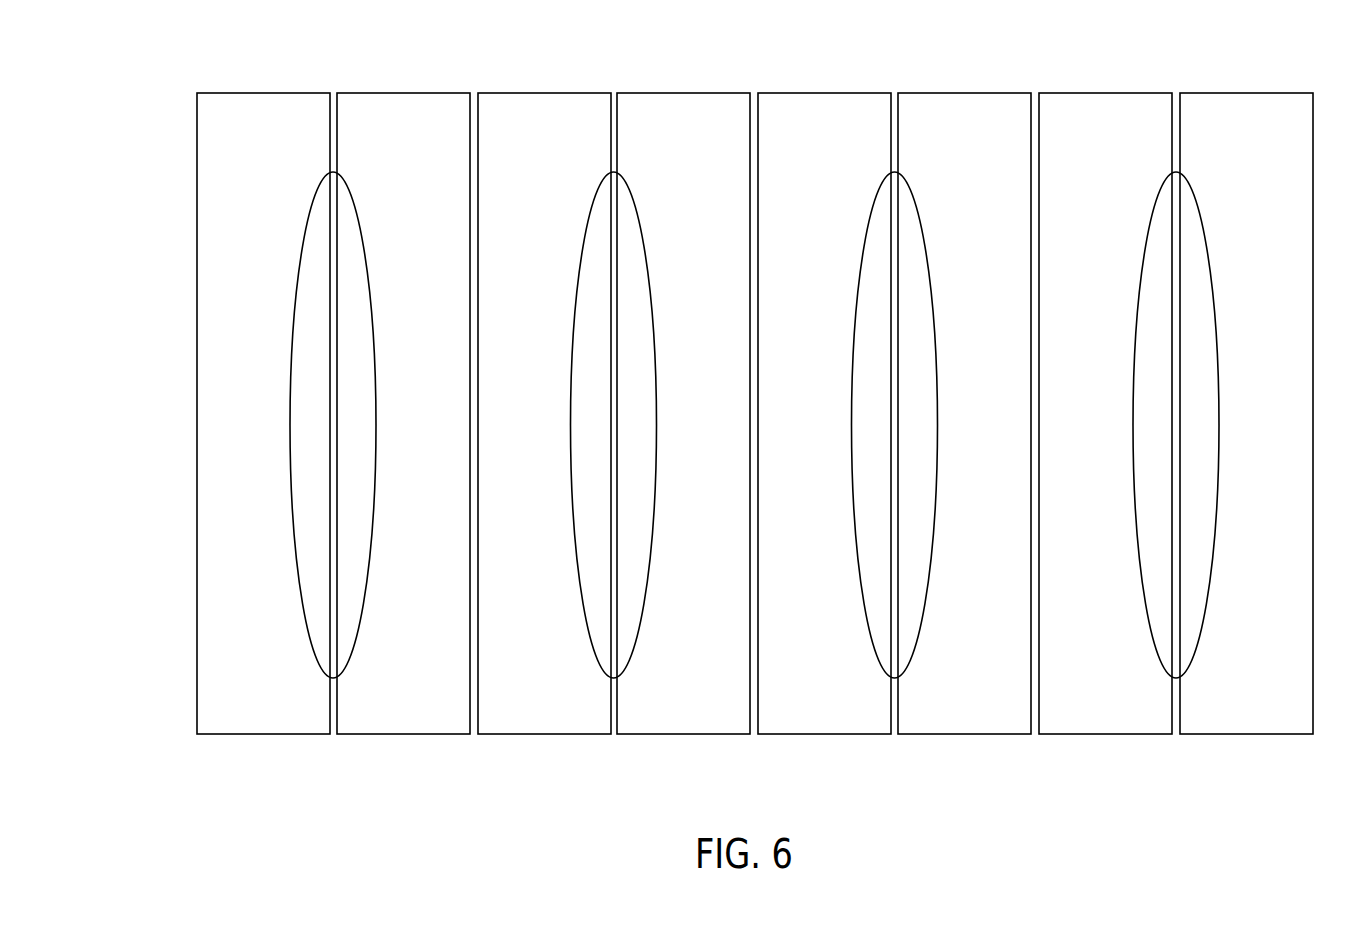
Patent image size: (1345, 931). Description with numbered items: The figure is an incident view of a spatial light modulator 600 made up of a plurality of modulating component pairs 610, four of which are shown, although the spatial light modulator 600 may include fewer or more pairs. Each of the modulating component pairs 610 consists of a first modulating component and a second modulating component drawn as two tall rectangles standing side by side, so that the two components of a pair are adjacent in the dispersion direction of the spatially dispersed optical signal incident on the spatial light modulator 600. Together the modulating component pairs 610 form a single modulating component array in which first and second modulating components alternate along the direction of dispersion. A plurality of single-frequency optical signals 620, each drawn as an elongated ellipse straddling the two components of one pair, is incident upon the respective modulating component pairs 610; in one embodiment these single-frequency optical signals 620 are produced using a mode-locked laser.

The spatial light modulator 600 is at (178, 842).
The modulating component pairs 610 is at (755, 456).
The single-frequency optical signals 620 is at (787, 356).